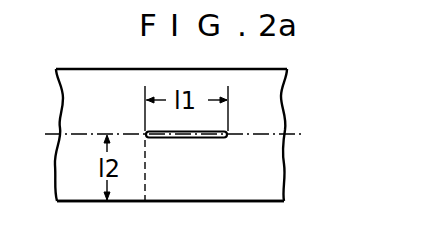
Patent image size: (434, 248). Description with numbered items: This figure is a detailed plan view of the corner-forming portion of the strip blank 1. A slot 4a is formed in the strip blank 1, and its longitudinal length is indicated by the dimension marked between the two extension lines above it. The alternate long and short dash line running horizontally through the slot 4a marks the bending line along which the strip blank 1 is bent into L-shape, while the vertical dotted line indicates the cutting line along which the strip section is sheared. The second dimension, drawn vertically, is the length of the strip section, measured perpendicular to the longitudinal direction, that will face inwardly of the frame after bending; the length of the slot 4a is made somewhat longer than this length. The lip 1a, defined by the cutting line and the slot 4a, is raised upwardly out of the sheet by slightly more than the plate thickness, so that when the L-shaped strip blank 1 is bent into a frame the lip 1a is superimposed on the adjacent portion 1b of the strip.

The strip blank 1 is at (282, 99).
The lip 1a is at (169, 199).
The adjacent portion 1b is at (75, 199).
The slot 4a is at (206, 140).